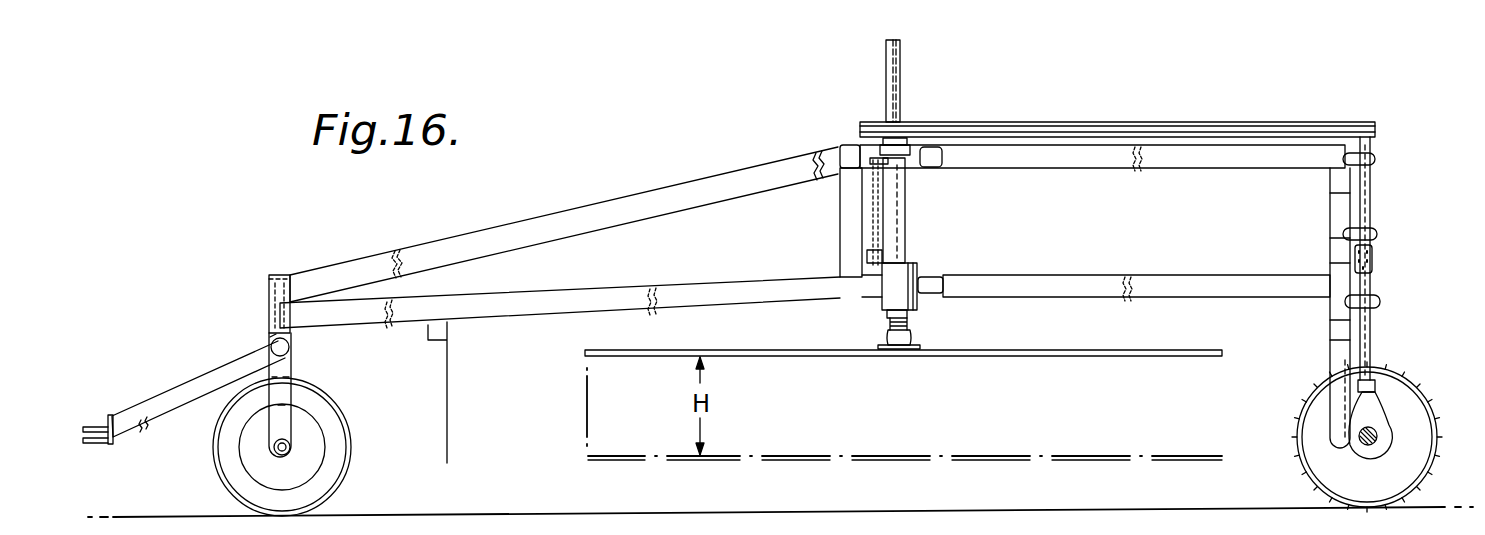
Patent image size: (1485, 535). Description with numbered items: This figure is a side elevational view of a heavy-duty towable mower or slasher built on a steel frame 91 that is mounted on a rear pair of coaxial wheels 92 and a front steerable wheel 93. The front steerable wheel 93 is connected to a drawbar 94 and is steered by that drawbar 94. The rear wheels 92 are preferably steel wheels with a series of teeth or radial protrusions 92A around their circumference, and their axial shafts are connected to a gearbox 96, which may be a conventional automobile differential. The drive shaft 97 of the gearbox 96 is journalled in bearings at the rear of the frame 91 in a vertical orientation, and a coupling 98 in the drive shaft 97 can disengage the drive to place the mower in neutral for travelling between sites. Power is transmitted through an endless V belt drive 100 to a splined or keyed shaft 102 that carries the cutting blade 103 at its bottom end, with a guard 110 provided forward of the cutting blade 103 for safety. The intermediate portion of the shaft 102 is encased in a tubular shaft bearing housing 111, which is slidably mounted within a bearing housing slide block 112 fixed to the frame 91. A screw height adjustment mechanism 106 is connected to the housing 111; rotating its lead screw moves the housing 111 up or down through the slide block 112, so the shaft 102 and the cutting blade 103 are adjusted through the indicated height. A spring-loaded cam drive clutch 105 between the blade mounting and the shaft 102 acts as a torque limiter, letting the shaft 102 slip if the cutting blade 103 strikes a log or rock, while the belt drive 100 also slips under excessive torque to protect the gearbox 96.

The steel frame 91 is at (593, 212).
The rear wheels 92 is at (1410, 407).
The teeth or radial protrusions 92A is at (1302, 402).
The front steerable wheel 93 is at (328, 415).
The drawbar 94 is at (185, 383).
The gearbox 96 is at (1357, 457).
The drive shaft 97 is at (1367, 220).
The coupling 98 is at (1372, 267).
The endless V belt drive 100 is at (1118, 122).
The splined or keyed shaft 102 is at (886, 62).
The cutting blade 103 is at (903, 405).
The spring-loaded cam drive clutch 105 is at (910, 333).
The screw height adjustment mechanism 106 is at (870, 207).
The guard 110 is at (447, 447).
The tubular shaft bearing housing 111 is at (903, 200).
The bearing housing slide block 112 is at (913, 257).